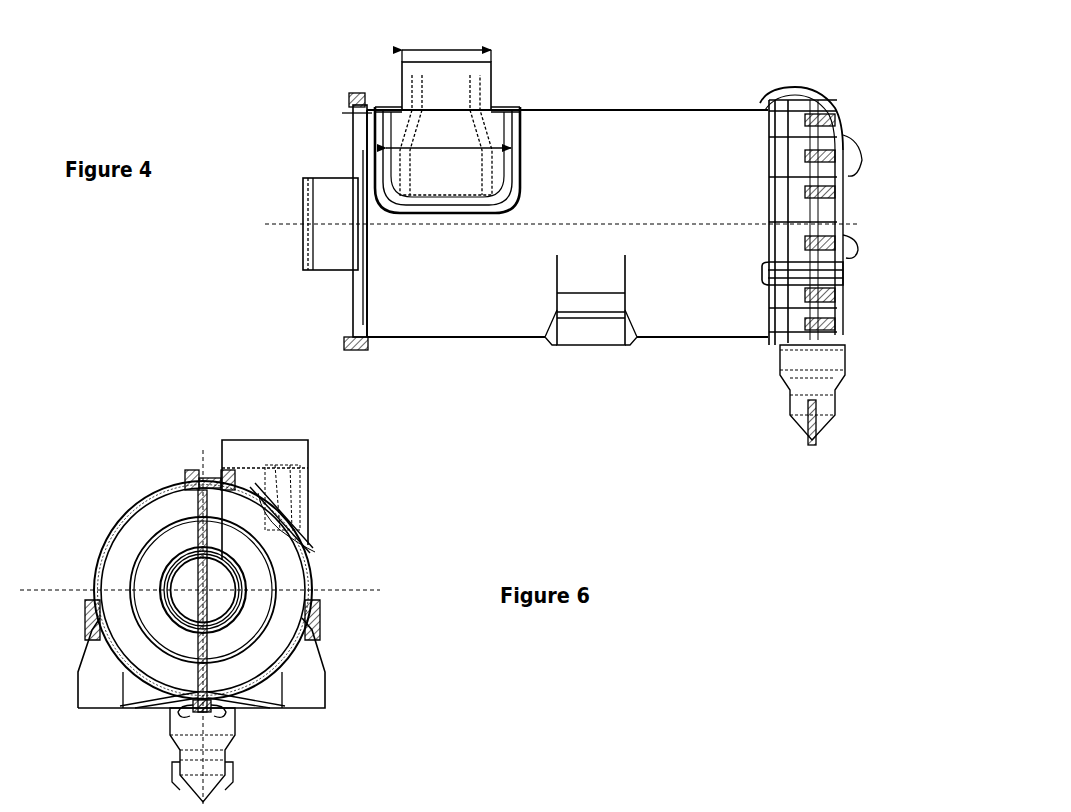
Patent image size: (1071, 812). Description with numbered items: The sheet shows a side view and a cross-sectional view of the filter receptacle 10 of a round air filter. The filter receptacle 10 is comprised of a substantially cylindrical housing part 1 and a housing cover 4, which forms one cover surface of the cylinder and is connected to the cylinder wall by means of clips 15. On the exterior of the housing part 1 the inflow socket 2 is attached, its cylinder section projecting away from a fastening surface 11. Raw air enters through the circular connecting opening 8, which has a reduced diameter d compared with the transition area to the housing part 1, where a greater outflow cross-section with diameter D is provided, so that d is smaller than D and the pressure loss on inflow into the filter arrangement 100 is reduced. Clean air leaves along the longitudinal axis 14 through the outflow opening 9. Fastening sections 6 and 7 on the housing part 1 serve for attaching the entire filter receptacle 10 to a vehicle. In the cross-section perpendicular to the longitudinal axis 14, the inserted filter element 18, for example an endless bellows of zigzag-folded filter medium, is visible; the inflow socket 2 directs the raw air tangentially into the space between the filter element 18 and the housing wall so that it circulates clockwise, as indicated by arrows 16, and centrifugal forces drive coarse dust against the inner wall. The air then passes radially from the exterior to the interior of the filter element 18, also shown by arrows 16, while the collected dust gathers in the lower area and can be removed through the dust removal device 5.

In FIG. 4, the filter receptacle 10 is at (262, 63).
In FIG. 4, the housing part 1 is at (458, 330).
In FIG. 6, the housing part 1 is at (100, 535).
In FIG. 4, the inflow socket 2 is at (505, 90).
In FIG. 6, the inflow socket 2 is at (320, 498).
In FIG. 4, the housing cover 4 is at (802, 207).
In FIG. 4, the dust removal device 5 is at (785, 365).
In FIG. 6, the dust removal device 5 is at (190, 470).
In FIG. 4, the fastening section 6 is at (610, 338).
In FIG. 6, the fastening section 6 is at (88, 700).
In FIG. 4, the fastening section 7 is at (368, 350).
In FIG. 4, the connecting opening 8 is at (405, 62).
In FIG. 6, the connecting opening 8 is at (275, 440).
In FIG. 4, the outflow opening 9 is at (303, 248).
In FIG. 4, the fastening surface 11 is at (515, 152).
In FIG. 4, the longitudinal axis 14 is at (285, 226).
In FIG. 4, the clips 15 is at (800, 88).
In FIG. 6, the arrows 16 is at (283, 558).
In FIG. 6, the filter element 18 is at (158, 567).
In FIG. 6, the filter arrangement 100 is at (80, 452).
In FIG. 4, the diameter of connecting opening d is at (452, 48).
In FIG. 4, the diameter of outflow cross-section D is at (425, 146).